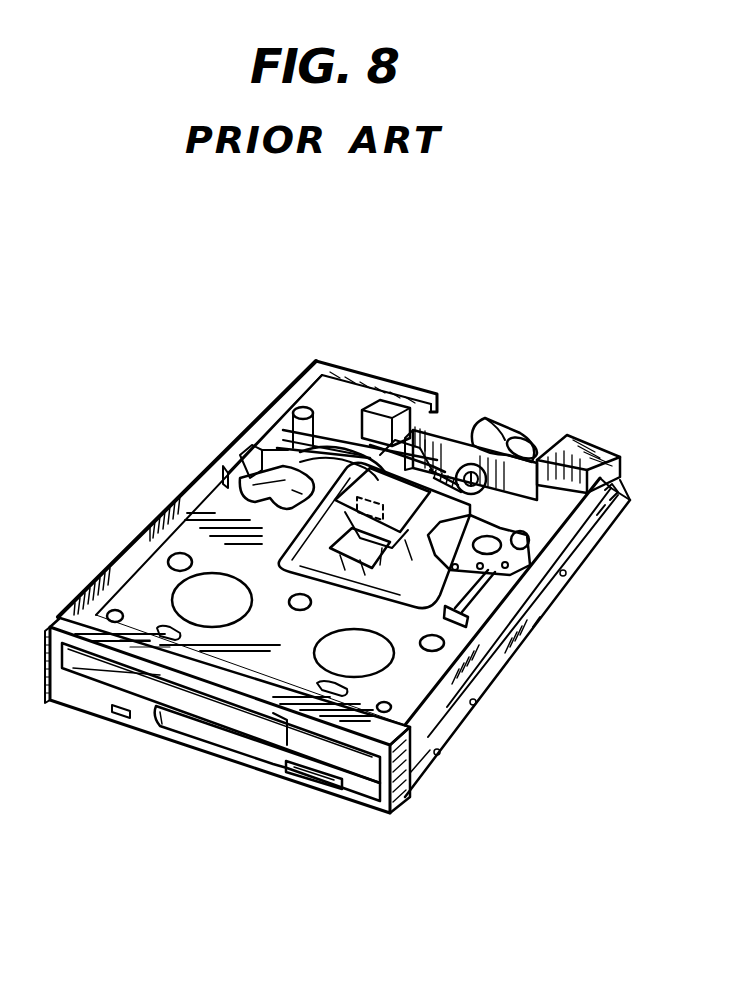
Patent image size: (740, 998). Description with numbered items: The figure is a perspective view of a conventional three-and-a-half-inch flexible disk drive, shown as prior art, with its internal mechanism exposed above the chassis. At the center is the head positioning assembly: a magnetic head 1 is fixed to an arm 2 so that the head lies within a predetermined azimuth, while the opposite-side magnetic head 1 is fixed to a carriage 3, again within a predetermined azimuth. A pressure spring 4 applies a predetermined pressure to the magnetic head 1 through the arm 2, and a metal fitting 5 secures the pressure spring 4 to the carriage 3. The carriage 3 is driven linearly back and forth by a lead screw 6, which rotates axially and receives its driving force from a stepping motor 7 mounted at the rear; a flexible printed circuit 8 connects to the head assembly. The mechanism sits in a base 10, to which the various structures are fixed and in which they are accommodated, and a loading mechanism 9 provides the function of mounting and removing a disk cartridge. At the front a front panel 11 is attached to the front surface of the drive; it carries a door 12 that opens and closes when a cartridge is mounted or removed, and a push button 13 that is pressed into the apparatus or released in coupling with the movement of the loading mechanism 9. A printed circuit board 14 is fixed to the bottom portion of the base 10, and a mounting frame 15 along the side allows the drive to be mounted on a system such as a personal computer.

The magnetic head 1 is at (388, 558).
The arm 2 is at (405, 408).
The carriage 3 is at (347, 573).
The pressure spring 4 is at (372, 410).
The metal fitting 5 is at (458, 472).
The lead screw 6 is at (474, 465).
The stepping motor 7 is at (500, 427).
The flexible printed circuit 8 is at (278, 410).
The loading mechanism 9 is at (427, 670).
The base 10 is at (623, 452).
The front panel 11 is at (380, 795).
The door 12 is at (233, 710).
The push button 13 is at (327, 782).
The printed circuit board 14 is at (623, 507).
The mounting frame 15 is at (503, 657).